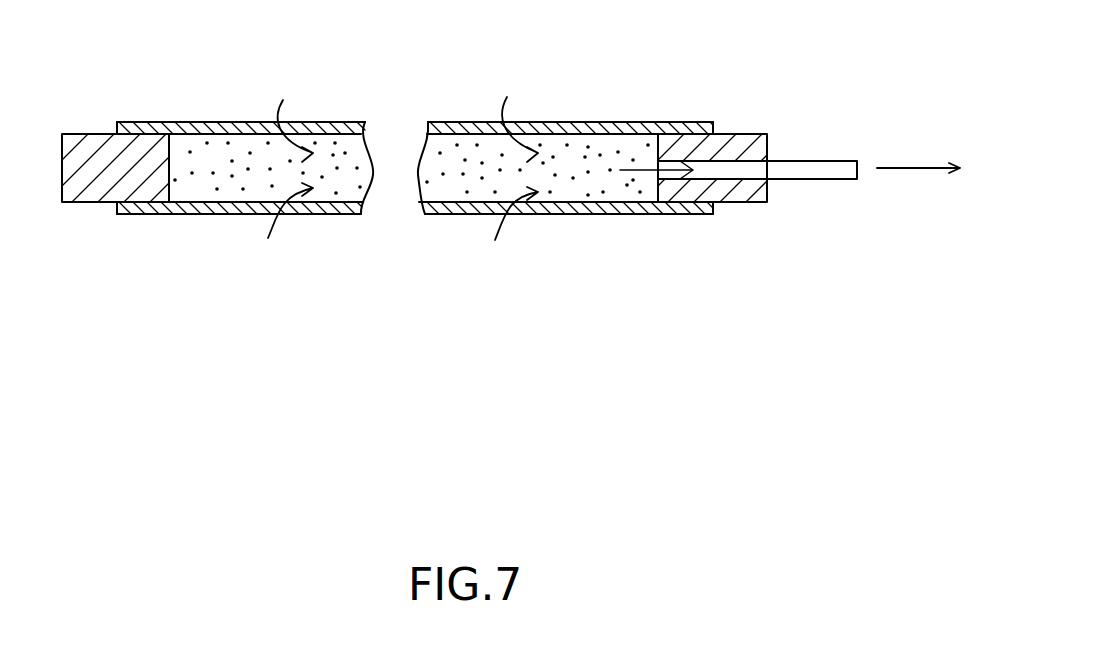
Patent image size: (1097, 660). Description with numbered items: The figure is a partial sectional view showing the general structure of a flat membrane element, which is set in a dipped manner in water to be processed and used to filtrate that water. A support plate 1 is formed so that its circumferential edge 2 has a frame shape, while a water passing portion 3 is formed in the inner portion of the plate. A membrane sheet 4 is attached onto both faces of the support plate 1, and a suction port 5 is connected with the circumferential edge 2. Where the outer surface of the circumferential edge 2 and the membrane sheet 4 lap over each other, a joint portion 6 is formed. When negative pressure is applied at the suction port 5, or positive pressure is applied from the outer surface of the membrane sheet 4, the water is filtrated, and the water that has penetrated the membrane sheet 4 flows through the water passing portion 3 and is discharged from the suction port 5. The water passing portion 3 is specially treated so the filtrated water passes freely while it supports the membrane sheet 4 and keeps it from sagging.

The support plate 1 is at (760, 130).
The circumferential edge 2 is at (77, 147).
The water passing portion 3 is at (582, 148).
The membrane sheet 4 is at (208, 126).
The suction port 5 is at (832, 172).
The joint portion 6 is at (148, 130).